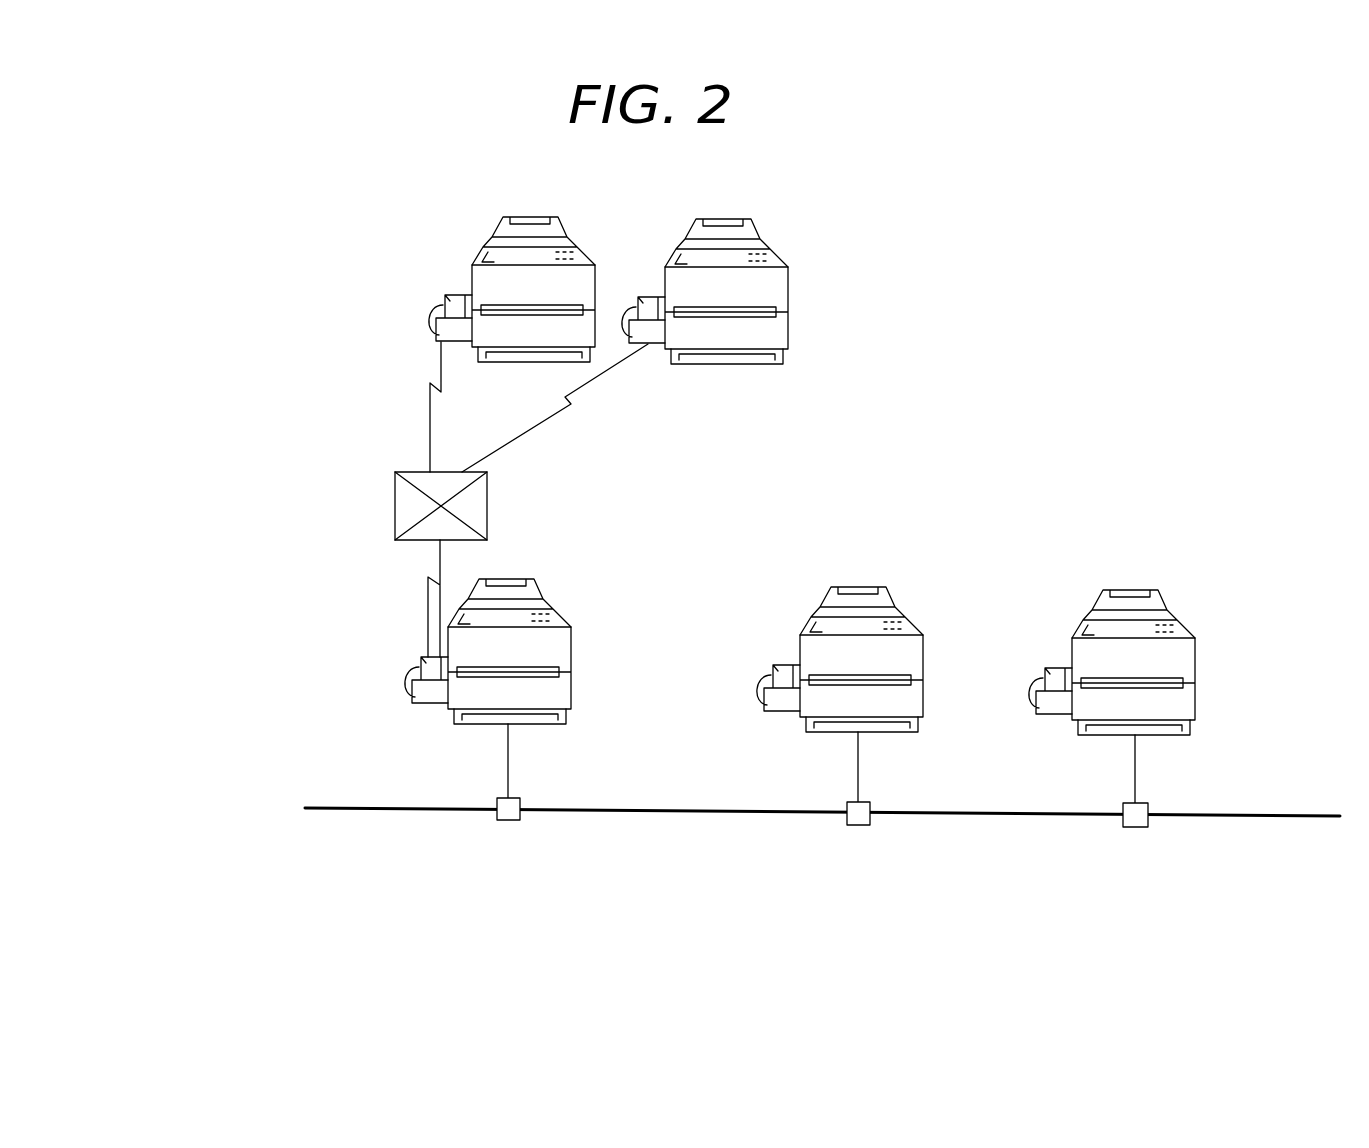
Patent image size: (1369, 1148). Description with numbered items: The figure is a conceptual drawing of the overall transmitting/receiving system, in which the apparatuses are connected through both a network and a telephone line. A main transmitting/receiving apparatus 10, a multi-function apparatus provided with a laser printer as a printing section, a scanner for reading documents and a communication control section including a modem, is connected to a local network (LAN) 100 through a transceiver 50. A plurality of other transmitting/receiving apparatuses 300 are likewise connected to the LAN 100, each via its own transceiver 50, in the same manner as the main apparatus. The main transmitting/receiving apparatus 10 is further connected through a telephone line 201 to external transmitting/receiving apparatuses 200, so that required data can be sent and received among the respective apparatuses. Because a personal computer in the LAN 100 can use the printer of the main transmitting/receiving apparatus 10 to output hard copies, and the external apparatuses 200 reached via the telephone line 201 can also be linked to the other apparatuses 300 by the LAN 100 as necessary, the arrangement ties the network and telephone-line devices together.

The main transmitting/receiving apparatus 10 is at (521, 581).
The transceiver 50 is at (505, 821).
The local network (LAN) 100 is at (307, 808).
The external transmitting/receiving apparatus 200 is at (524, 218).
The telephone line 201 is at (394, 504).
The other transmitting/receiving apparatus 300 is at (858, 590).